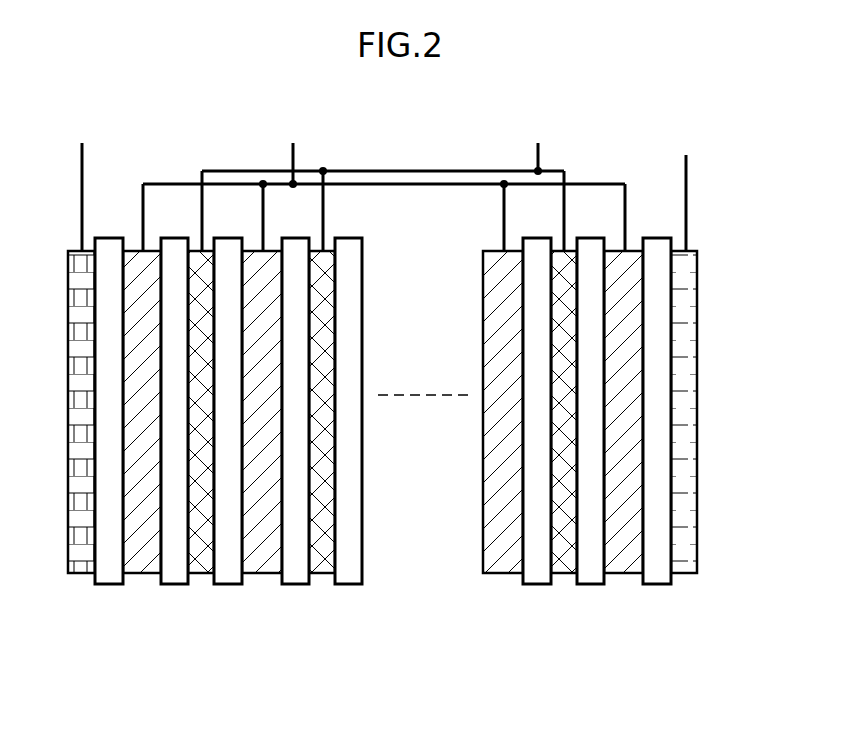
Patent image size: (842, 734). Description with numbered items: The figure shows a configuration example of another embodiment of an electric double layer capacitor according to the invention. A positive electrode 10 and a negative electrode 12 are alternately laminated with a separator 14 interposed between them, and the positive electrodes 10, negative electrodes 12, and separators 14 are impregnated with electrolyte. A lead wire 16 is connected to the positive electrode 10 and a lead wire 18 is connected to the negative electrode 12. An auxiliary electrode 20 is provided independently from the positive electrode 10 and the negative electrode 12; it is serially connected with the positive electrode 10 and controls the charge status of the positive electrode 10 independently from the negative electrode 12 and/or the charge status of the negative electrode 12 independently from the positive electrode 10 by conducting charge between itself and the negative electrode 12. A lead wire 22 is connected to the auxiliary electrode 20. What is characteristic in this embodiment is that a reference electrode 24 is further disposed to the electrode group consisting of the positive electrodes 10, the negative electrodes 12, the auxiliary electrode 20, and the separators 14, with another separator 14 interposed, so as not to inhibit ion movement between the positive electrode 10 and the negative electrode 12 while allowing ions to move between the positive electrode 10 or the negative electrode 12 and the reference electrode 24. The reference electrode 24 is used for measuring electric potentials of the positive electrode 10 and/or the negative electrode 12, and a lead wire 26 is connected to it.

The positive electrode 10 is at (202, 573).
The negative electrode 12 is at (142, 573).
The separator 14 is at (110, 584).
The lead wire 16 is at (538, 150).
The lead wire 18 is at (293, 150).
The auxiliary electrode 20 is at (685, 573).
The lead wire 22 is at (686, 163).
The reference electrode 24 is at (83, 573).
The lead wire 26 is at (82, 150).